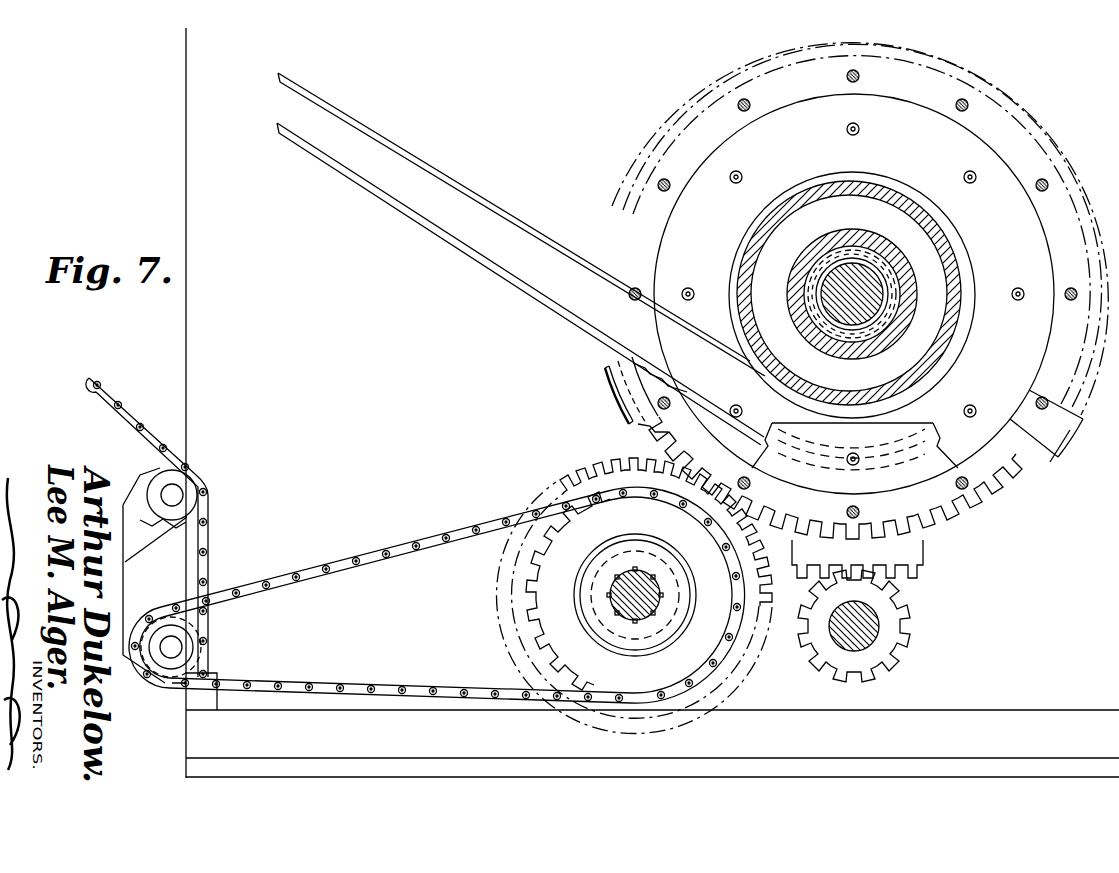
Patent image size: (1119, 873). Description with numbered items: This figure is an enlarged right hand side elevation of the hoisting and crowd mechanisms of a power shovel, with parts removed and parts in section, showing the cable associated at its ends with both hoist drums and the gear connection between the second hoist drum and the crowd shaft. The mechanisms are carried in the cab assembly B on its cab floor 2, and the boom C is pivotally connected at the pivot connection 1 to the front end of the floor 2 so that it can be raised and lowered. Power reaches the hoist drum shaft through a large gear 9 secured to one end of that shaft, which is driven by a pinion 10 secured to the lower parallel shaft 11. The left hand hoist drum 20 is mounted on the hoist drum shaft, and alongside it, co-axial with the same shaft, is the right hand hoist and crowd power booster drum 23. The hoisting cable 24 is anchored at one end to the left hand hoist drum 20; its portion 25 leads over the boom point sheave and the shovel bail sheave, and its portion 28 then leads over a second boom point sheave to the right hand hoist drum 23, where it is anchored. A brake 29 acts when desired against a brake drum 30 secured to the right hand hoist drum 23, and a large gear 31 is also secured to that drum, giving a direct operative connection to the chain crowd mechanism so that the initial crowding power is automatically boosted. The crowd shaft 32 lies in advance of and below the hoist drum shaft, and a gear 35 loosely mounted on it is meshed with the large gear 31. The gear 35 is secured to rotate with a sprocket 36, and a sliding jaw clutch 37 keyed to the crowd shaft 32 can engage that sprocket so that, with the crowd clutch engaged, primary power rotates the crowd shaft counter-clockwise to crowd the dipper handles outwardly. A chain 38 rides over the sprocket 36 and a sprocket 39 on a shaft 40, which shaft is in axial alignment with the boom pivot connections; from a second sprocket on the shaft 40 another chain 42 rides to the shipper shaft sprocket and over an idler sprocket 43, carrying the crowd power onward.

The boom pivot connection 1 is at (178, 647).
The cab floor 2 is at (186, 763).
The large gear 9 is at (912, 568).
The pinion 10 is at (897, 608).
The lower parallel shaft 11 is at (865, 635).
The hoist drum 20 is at (933, 423).
The hoist and crowd power booster drum 23 is at (910, 268).
The hoisting cable 24 is at (505, 259).
The hoist cable portion 25 is at (360, 178).
The cable portion 28 is at (369, 128).
The brake 29 is at (608, 388).
The brake drum 30 is at (637, 370).
The large gear 31 is at (668, 430).
The crowd shaft 32 is at (615, 607).
The gear 35 is at (580, 487).
The sprocket 36 is at (555, 587).
The sliding jaw clutch 37 is at (598, 597).
The chain 38 is at (395, 558).
The sprocket 39 is at (182, 632).
The shaft 40 is at (163, 683).
The chain 42 is at (132, 415).
The idler sprocket 43 is at (150, 472).
The cab assembly B is at (184, 156).
The boom C is at (138, 597).